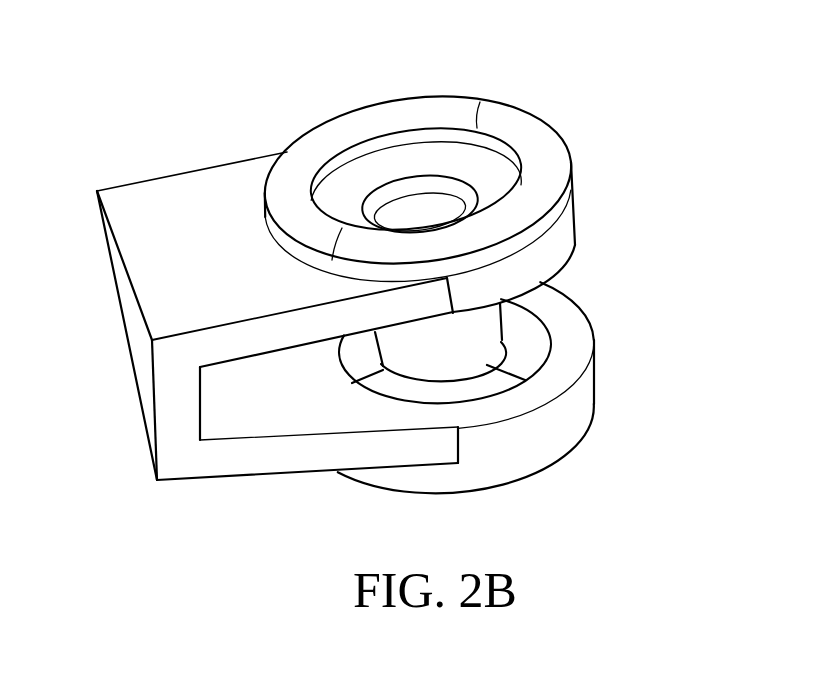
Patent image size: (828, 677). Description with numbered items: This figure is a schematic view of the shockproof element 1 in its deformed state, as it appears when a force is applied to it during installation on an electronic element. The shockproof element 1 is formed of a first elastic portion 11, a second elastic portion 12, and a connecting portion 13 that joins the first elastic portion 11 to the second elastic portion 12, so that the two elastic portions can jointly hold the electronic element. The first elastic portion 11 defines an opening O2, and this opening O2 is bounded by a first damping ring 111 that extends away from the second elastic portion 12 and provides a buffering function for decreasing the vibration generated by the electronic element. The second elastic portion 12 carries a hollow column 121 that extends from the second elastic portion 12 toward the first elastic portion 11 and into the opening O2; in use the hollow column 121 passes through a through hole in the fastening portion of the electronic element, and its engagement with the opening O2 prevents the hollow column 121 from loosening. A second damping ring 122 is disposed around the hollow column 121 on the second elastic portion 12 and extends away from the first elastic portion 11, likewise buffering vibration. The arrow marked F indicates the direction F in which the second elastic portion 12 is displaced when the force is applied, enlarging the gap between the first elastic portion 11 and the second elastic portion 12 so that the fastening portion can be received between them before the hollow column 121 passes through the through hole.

The shockproof element 1 is at (226, 72).
The first elastic portion 11 is at (265, 453).
The first damping ring 111 is at (537, 443).
The second elastic portion 12 is at (190, 187).
The hollow column 121 is at (423, 348).
The second damping ring 122 is at (525, 132).
The connecting portion 13 is at (142, 350).
The opening O2 is at (527, 342).
The direction F is at (625, 187).